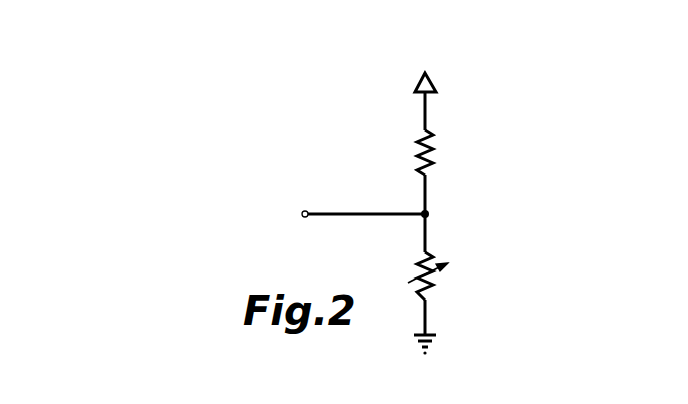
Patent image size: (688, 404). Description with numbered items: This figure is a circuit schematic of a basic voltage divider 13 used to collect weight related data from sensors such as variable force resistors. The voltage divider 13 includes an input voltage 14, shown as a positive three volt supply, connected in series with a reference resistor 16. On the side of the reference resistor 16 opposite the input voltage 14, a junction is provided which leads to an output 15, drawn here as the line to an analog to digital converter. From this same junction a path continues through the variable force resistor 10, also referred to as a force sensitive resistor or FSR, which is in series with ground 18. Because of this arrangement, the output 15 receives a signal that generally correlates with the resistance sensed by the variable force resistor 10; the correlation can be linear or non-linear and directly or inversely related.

The variable force resistor 10 is at (447, 290).
The voltage divider 13 is at (482, 117).
The input voltage 14 is at (432, 79).
The output 15 is at (350, 214).
The reference resistor 16 is at (432, 157).
The ground 18 is at (432, 347).